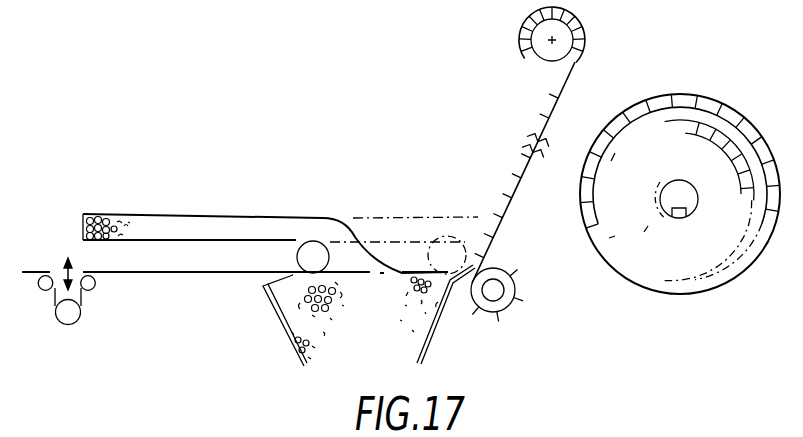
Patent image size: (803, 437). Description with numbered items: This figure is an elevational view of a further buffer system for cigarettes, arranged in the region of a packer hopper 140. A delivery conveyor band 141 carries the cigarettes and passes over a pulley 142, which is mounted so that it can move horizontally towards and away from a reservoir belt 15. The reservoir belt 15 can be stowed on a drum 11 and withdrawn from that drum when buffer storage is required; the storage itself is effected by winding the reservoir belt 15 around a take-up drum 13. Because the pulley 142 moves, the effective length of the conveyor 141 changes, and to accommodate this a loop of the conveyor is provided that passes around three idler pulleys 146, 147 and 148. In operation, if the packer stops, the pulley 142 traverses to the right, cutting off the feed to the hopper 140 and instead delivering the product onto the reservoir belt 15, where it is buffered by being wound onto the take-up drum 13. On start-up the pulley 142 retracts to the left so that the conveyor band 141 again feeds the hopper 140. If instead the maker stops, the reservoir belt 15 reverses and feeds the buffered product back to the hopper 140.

The drum 11 is at (674, 210).
The take-up drum 13 is at (557, 36).
The reservoir belt 15 is at (512, 173).
The packer hopper 140 is at (425, 348).
The delivery conveyor band 141 is at (232, 240).
The pulley 142 is at (312, 250).
The idler pulley 146 is at (42, 291).
The idler pulley 147 is at (72, 318).
The idler pulley 148 is at (96, 286).